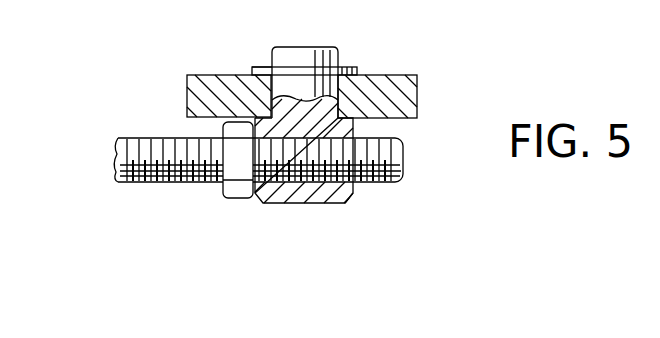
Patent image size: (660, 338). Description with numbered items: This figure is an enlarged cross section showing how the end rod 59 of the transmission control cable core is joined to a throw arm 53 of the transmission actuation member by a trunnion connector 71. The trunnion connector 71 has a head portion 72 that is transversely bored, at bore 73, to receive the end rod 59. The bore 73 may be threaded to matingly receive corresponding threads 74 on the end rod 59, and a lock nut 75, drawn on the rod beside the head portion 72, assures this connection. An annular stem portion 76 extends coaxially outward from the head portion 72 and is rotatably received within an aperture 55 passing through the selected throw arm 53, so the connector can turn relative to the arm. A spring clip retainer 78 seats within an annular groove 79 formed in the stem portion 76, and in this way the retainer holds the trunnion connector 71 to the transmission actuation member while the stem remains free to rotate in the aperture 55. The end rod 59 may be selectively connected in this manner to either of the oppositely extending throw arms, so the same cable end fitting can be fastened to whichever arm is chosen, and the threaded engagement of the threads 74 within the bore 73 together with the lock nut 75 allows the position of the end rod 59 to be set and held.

The throw arm 53 is at (412, 92).
The aperture 55 is at (276, 88).
The end rod 59 is at (126, 145).
The trunnion connector 71 is at (355, 197).
The head portion 72 is at (283, 195).
The bore 73 is at (291, 142).
The threads 74 is at (368, 140).
The lock nut 75 is at (221, 192).
The annular stem portion 76 is at (308, 50).
The spring clip retainer 78 is at (358, 68).
The annular groove 79 is at (271, 67).